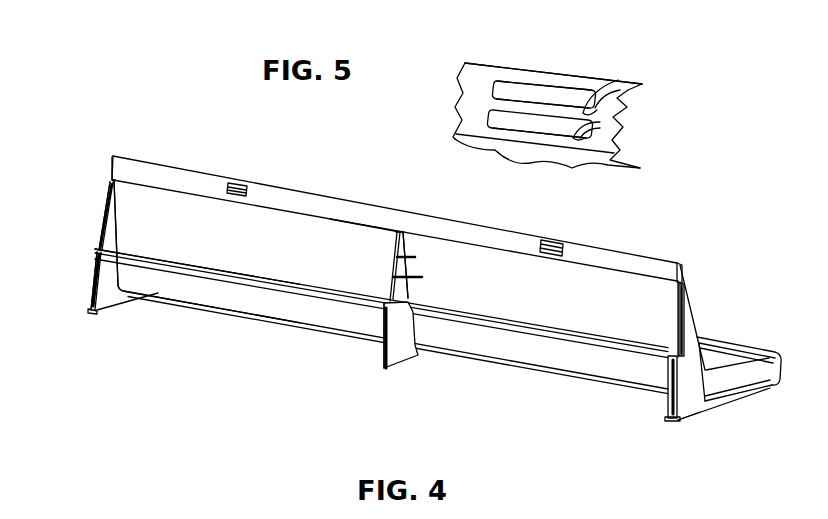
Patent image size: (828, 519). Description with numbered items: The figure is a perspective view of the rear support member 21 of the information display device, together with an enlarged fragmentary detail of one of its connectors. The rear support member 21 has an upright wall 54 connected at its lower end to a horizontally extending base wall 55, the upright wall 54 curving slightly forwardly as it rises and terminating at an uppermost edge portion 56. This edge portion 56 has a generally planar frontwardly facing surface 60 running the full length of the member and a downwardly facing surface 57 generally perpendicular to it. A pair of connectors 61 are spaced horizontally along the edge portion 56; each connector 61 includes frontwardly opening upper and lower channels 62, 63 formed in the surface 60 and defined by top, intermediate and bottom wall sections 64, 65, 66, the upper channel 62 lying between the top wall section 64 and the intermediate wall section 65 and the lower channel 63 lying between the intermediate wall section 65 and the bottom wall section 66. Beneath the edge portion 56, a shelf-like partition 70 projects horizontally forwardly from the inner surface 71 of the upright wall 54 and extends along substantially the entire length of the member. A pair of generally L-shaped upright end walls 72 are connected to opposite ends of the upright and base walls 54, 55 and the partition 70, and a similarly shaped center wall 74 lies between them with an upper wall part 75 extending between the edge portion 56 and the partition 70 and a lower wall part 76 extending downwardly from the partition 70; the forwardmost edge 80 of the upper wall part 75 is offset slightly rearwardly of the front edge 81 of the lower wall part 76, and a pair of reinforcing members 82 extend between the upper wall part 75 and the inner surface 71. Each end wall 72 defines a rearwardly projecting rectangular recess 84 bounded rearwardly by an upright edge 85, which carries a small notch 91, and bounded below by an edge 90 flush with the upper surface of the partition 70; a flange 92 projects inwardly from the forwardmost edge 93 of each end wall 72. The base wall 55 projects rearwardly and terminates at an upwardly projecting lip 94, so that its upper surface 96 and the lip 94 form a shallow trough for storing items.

In FIG. 4, the rear support member 21 is at (194, 320).
In FIG. 4, the upright wall 54 is at (168, 281).
In FIG. 4, the base wall 55 is at (710, 376).
In FIG. 4, the uppermost edge portion 56 is at (162, 177).
In FIG. 5, the uppermost edge portion 56 is at (481, 61).
In FIG. 4, the downwardly facing surface 57 is at (352, 225).
In FIG. 4, the frontwardly facing surface 60 is at (296, 206).
In FIG. 5, the frontwardly facing surface 60 is at (480, 90).
In FIG. 4, the connectors 61 is at (238, 177).
In FIG. 5, the connectors 61 is at (600, 73).
In FIG. 5, the upper channel 62 is at (532, 88).
In FIG. 5, the lower channel 63 is at (577, 132).
In FIG. 5, the top wall section 64 is at (557, 85).
In FIG. 5, the intermediate wall section 65 is at (595, 93).
In FIG. 5, the bottom wall section 66 is at (578, 140).
In FIG. 4, the partition 70 is at (308, 297).
In FIG. 4, the inner surface 71 is at (272, 258).
In FIG. 4, the end walls 72 is at (110, 236).
In FIG. 4, the center wall 74 is at (380, 326).
In FIG. 4, the upper wall part 75 is at (408, 294).
In FIG. 4, the lower wall part 76 is at (397, 350).
In FIG. 4, the forwardmost edge 80 is at (398, 231).
In FIG. 4, the front edge 81 is at (383, 358).
In FIG. 4, the reinforcing members 82 is at (397, 258).
In FIG. 4, the recess 84 is at (98, 231).
In FIG. 4, the upright edges 85 is at (112, 178).
In FIG. 4, the edges 90 is at (98, 253).
In FIG. 4, the notches 91 is at (106, 212).
In FIG. 4, the flange 92 is at (100, 316).
In FIG. 4, the forwardmost edge 93 is at (93, 294).
In FIG. 4, the lip 94 is at (752, 343).
In FIG. 4, the upper surface 96 is at (730, 388).